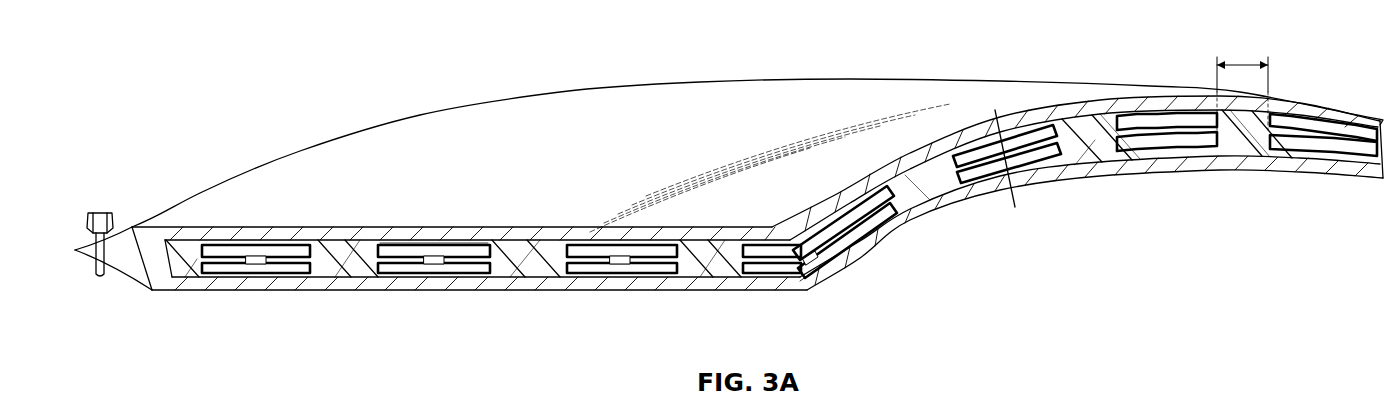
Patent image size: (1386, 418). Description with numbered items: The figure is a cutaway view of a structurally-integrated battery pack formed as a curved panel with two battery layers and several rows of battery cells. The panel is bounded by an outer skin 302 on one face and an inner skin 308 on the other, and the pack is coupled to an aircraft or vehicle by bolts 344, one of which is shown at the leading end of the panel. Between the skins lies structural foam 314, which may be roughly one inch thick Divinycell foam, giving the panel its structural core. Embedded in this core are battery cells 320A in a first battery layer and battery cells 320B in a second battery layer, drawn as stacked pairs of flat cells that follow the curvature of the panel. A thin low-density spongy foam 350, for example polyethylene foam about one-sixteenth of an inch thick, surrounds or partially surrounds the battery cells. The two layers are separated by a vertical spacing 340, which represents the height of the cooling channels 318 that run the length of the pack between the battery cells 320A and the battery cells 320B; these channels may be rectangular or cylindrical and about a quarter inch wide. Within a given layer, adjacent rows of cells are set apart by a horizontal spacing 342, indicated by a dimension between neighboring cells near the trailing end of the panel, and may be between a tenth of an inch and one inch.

The outer skin 302 is at (544, 96).
The inner skin 308 is at (560, 284).
The structural foam 314 is at (330, 250).
The cooling channels 318 is at (262, 265).
The battery cells in a first battery layer 320A is at (303, 250).
The battery cells in a second battery layer 320B is at (220, 270).
The vertical spacing 340 is at (995, 125).
The horizontal spacing 342 is at (1243, 63).
The bolts 344 is at (101, 211).
The spongy foam 350 is at (425, 243).